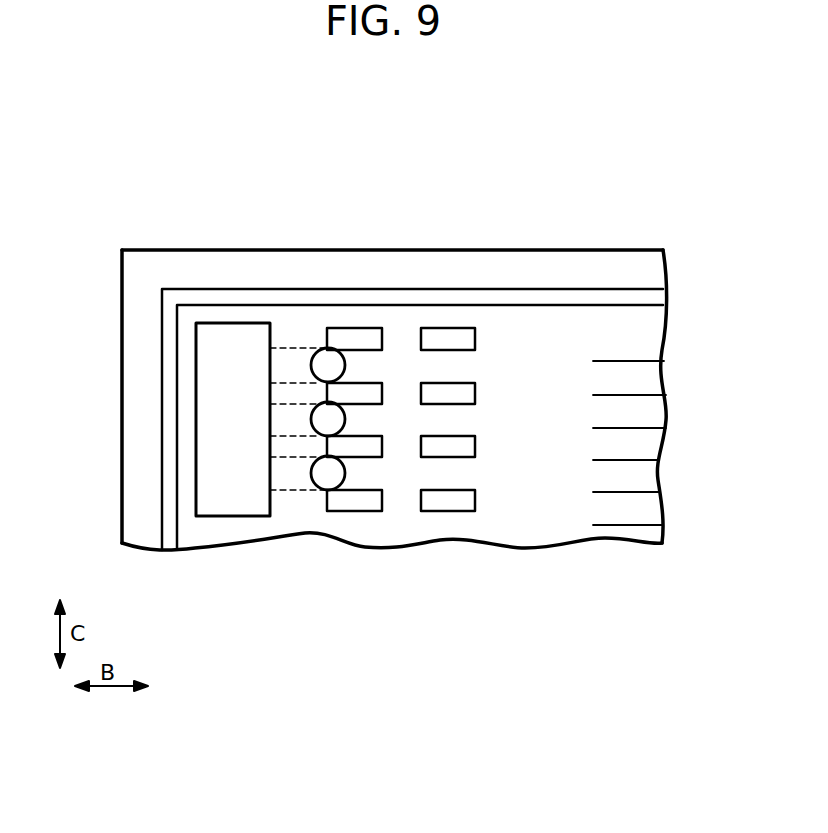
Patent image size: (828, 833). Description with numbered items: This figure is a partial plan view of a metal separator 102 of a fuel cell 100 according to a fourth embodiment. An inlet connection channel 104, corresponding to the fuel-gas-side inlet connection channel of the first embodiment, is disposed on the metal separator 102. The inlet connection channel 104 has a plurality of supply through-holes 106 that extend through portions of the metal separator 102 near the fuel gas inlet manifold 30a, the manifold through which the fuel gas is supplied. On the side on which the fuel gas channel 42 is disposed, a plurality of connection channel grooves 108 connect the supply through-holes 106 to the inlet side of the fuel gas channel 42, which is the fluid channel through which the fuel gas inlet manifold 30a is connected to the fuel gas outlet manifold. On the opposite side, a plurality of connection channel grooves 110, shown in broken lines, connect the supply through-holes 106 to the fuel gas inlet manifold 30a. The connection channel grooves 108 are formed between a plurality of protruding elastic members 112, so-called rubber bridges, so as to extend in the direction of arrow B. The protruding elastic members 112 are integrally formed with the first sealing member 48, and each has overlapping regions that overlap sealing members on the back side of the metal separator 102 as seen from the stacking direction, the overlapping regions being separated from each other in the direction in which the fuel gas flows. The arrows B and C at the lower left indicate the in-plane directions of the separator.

The fuel cell 100 is at (505, 72).
The metal separator 102 is at (380, 242).
The inlet connection channel 104 is at (400, 323).
The supply through-holes 106 is at (322, 420).
The connection channel grooves 108 is at (438, 414).
The connection channel grooves 110 is at (292, 360).
The protruding elastic members 112 is at (448, 394).
The fuel gas inlet manifold 30a is at (232, 340).
The fuel gas channel 42 is at (625, 515).
The first sealing member 48 is at (597, 268).